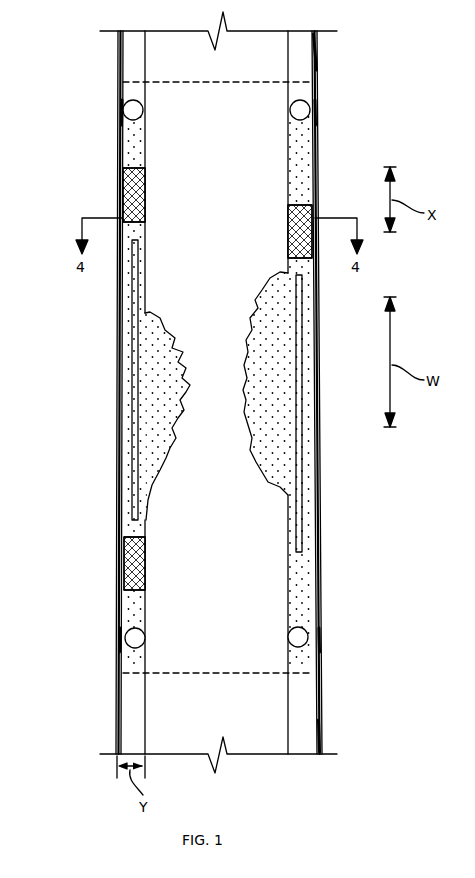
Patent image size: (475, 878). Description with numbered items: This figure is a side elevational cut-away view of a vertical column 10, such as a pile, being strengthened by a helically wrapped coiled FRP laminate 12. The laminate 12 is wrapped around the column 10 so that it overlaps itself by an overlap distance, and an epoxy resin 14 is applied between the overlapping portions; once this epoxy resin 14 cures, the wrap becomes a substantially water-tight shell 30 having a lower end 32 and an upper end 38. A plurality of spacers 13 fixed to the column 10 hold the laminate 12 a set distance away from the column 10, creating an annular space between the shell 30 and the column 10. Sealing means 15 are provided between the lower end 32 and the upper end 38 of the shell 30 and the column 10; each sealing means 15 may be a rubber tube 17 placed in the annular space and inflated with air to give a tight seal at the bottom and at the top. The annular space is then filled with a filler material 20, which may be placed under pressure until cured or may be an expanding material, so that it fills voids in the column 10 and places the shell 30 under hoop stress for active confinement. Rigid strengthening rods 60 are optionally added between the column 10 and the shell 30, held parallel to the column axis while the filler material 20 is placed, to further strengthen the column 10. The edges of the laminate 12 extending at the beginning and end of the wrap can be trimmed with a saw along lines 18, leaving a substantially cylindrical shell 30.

The vertical column 10 is at (280, 546).
The coiled FRP laminate 12 is at (116, 730).
The spacers 13 is at (128, 186).
The epoxy resin 14 is at (119, 280).
The sealing means 15 is at (136, 110).
The rubber tube 17 is at (124, 118).
The trim lines 18 is at (232, 82).
The filler material 20 is at (286, 434).
The shell 30 is at (322, 173).
The lower end 32 is at (321, 738).
The upper end 38 is at (317, 62).
The rigid strengthening rods 60 is at (135, 374).